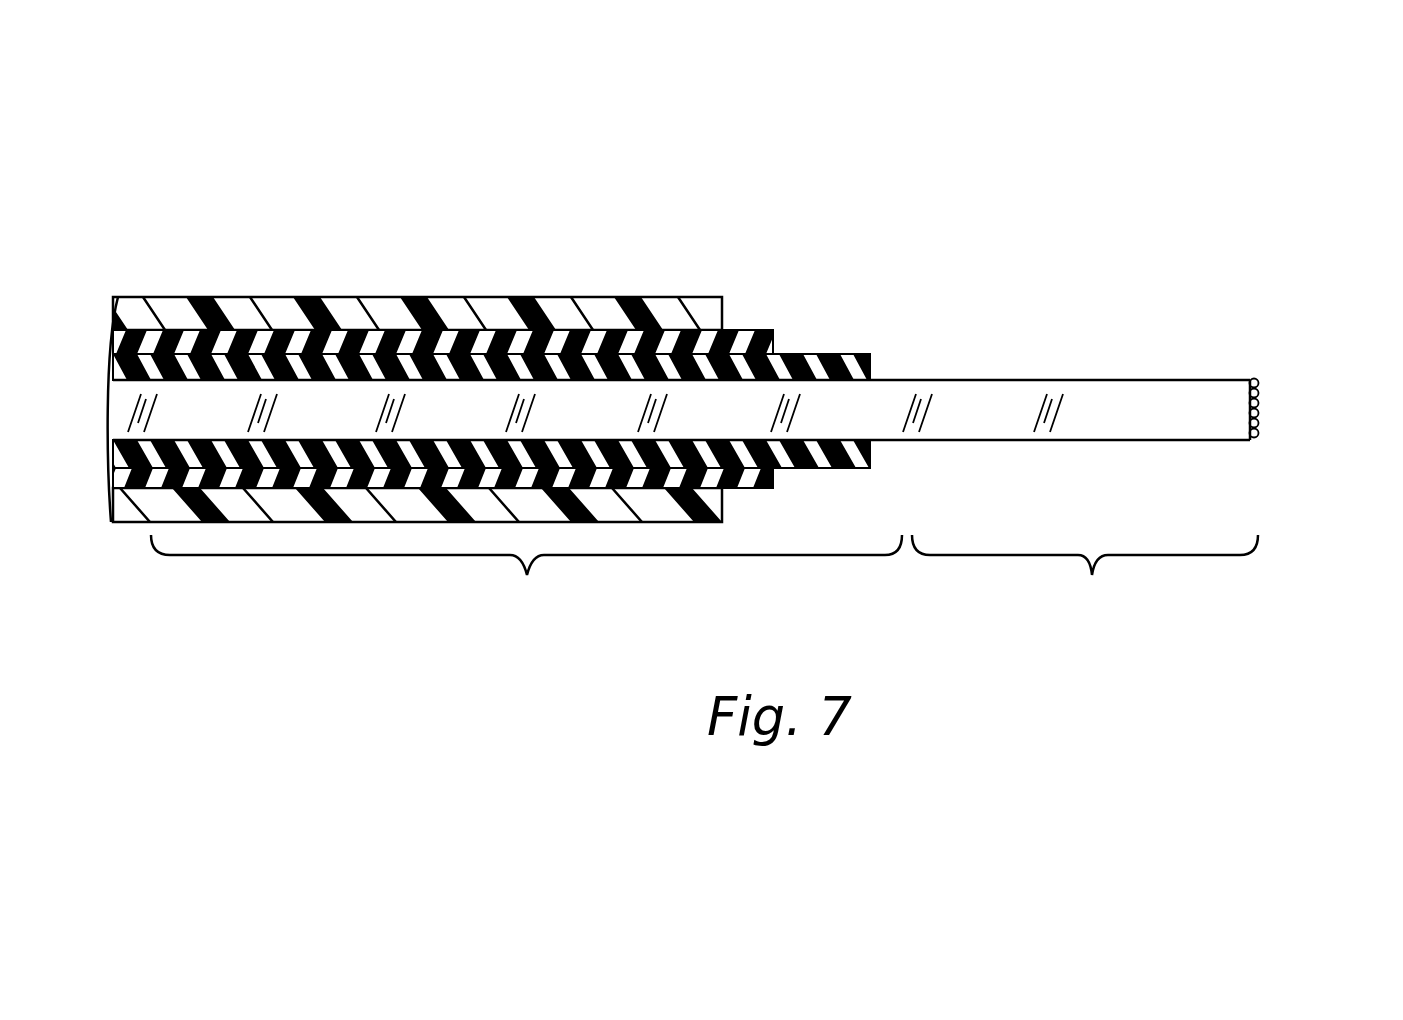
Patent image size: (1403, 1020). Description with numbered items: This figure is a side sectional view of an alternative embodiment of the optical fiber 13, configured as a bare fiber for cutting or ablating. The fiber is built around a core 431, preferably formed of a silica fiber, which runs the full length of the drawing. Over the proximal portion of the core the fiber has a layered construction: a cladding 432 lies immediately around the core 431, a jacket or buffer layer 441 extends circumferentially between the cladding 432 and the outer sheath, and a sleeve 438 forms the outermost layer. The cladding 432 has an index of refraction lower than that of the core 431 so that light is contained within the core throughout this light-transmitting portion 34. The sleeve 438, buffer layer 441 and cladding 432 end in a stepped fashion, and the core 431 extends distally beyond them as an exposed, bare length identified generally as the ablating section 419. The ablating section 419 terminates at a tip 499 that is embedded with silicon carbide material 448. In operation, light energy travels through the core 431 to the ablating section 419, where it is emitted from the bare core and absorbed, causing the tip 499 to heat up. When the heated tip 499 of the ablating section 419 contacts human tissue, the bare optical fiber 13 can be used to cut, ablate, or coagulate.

The optical fiber 13 is at (568, 242).
The light-transmitting portion 34 is at (526, 574).
The ablating section 419 is at (1085, 574).
The core 431 is at (982, 407).
The cladding 432 is at (496, 368).
The sleeve 438 is at (672, 297).
The buffer layer 441 is at (348, 337).
The silicon carbide material 448 is at (1262, 378).
The tip 499 is at (1210, 367).